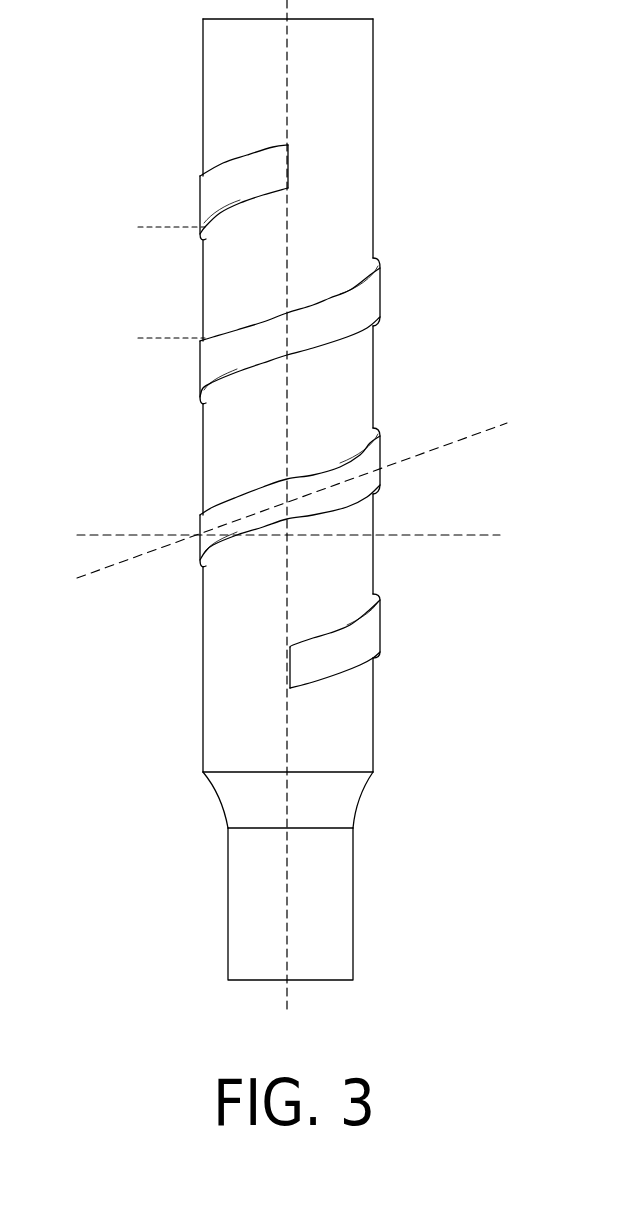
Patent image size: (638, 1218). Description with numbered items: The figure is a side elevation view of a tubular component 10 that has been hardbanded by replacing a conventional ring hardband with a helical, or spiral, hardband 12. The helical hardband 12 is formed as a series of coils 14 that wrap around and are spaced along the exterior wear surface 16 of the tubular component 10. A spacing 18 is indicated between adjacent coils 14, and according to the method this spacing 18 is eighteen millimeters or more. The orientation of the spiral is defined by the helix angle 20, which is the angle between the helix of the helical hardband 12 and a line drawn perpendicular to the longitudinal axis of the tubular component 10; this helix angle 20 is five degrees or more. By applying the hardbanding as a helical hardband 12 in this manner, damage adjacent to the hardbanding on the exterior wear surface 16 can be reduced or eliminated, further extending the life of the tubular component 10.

The tubular component 10 is at (338, 152).
The helical hardband 12 is at (352, 308).
The coils 14 is at (220, 188).
The exterior wear surface 16 is at (343, 717).
The spacing 18 is at (155, 233).
The helix angle 20 is at (491, 527).